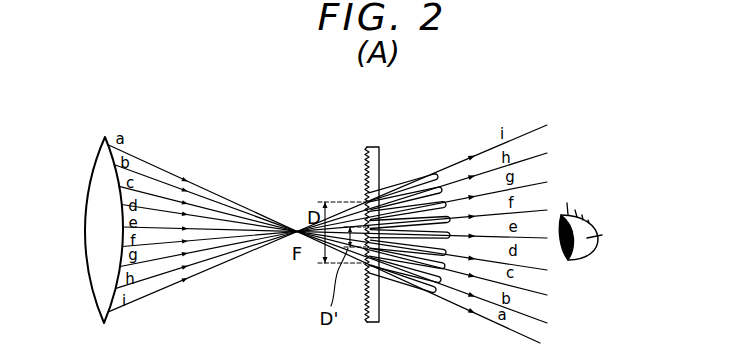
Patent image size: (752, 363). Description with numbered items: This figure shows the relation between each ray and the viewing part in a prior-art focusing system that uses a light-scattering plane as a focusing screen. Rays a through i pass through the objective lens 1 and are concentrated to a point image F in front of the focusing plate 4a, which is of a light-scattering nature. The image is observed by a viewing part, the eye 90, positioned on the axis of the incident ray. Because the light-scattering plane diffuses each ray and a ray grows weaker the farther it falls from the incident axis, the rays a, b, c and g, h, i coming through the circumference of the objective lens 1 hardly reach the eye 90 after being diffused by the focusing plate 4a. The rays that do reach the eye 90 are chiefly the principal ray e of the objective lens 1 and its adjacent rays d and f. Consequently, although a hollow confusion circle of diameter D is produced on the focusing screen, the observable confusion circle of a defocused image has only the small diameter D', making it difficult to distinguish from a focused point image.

The objective lens 1 is at (103, 163).
The focusing plate 4a is at (379, 147).
The eye 90 is at (592, 237).